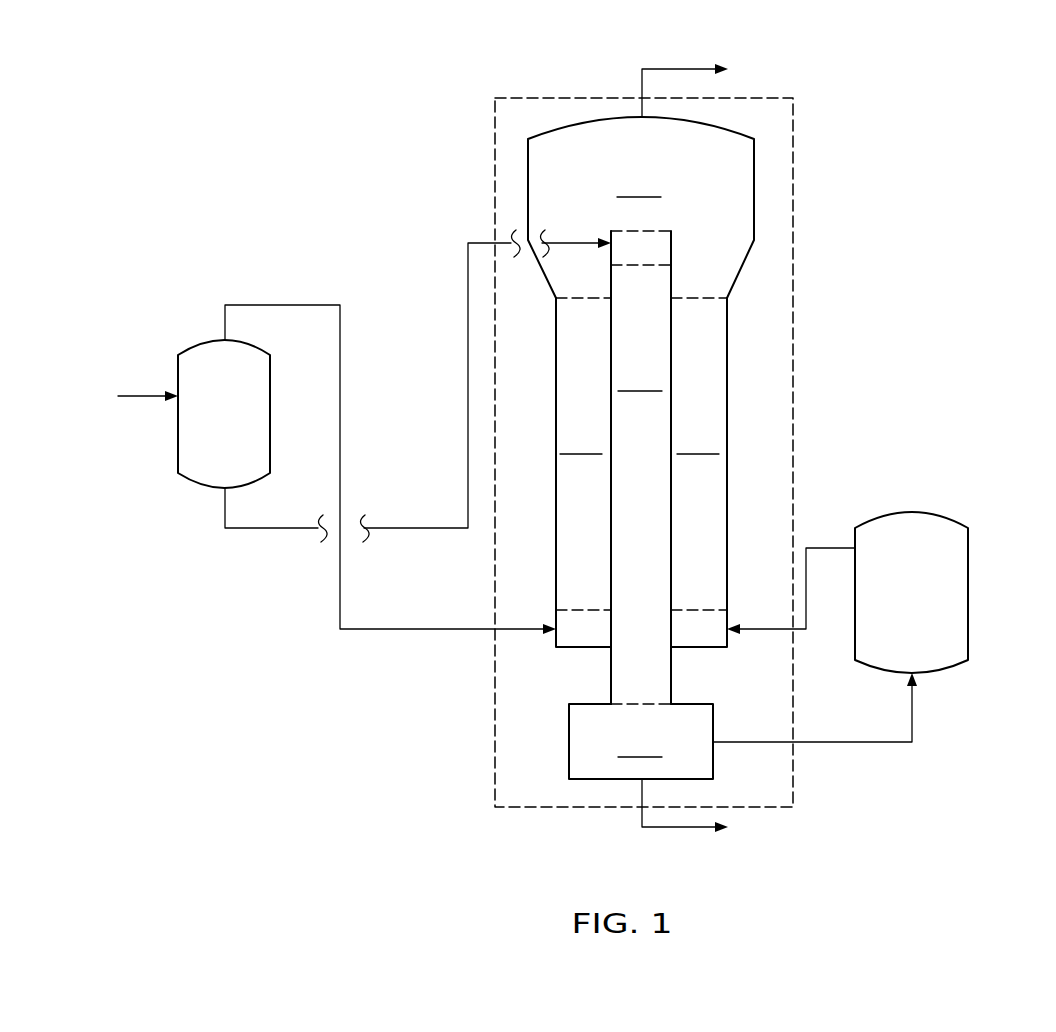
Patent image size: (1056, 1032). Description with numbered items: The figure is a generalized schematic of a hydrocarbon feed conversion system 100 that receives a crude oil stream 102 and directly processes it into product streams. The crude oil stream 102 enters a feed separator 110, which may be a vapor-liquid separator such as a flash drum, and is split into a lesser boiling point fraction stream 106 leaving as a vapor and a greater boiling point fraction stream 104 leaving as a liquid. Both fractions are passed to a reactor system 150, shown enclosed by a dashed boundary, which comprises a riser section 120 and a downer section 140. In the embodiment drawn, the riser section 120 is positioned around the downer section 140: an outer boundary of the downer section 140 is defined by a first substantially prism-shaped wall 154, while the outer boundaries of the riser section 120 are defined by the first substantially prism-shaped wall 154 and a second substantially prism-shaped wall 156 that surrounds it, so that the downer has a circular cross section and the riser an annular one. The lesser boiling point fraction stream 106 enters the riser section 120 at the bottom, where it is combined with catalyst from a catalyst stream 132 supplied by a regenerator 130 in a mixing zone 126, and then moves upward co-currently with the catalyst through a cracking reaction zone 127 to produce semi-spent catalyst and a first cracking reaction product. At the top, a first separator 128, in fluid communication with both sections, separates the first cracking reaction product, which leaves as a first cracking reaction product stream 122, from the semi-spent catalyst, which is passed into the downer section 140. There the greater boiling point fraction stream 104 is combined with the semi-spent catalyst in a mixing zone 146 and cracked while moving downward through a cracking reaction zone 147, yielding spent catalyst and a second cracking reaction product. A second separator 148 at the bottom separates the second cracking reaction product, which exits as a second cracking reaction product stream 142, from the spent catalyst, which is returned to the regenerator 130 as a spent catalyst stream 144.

The hydrocarbon feed conversion system 100 is at (983, 158).
The crude oil stream 102 is at (131, 394).
The greater boiling point fraction stream 104 is at (468, 380).
The lesser boiling point fraction stream 106 is at (283, 305).
The feed separator 110 is at (178, 452).
The riser section 120 is at (727, 353).
The first cracking reaction product stream 122 is at (687, 68).
The mixing zone 126 is at (573, 647).
The cracking reaction zone 127 is at (639, 440).
The first separator 128 is at (641, 207).
The regenerator 130 is at (968, 591).
The catalyst stream 132 is at (833, 548).
The downer section 140 is at (611, 528).
The second cracking reaction product stream 142 is at (665, 827).
The spent catalyst stream 144 is at (842, 742).
The mixing zone 146 is at (671, 249).
The cracking reaction zone 147 is at (641, 484).
The second separator 148 is at (641, 741).
The reactor system 150 is at (793, 173).
The first substantially prism-shaped wall 154 is at (611, 325).
The second substantially prism-shaped wall 156 is at (556, 452).